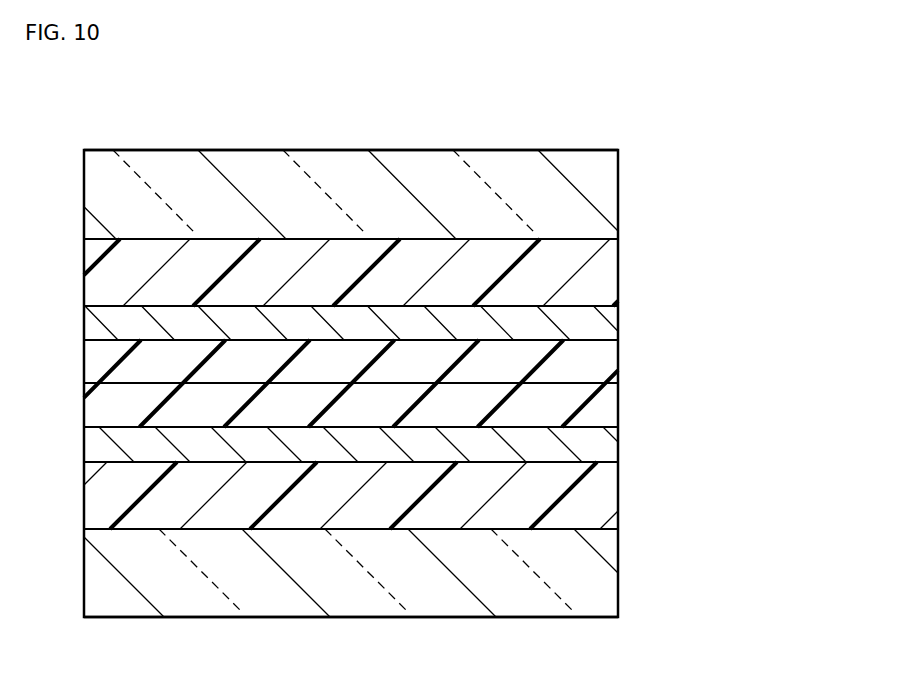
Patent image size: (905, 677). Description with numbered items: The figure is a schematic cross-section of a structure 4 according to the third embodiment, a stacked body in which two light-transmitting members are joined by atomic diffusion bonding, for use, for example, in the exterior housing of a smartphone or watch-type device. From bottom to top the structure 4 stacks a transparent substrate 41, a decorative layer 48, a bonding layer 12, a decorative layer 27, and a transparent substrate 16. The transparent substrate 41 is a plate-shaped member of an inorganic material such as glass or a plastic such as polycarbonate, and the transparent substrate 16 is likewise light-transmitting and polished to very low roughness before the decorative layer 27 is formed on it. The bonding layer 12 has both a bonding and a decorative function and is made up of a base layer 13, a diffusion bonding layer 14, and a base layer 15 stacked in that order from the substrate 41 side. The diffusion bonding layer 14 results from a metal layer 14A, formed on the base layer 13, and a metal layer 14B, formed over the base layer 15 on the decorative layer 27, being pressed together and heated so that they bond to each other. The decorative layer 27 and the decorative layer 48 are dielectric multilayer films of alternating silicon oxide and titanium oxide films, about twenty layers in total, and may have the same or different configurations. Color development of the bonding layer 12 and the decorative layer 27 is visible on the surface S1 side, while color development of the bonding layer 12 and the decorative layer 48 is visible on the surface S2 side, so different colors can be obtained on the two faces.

The structure 4 is at (683, 84).
The surface S1 is at (591, 142).
The surface S2 is at (593, 625).
The transparent substrate 16 is at (609, 196).
The decorative layer 27 is at (609, 276).
The bonding layer 12 is at (435, 384).
The base layer 15 is at (609, 324).
The diffusion bonding layer 14 is at (409, 383).
The metal layer 14B is at (609, 369).
The metal layer 14A is at (609, 403).
The base layer 13 is at (609, 446).
The decorative layer 48 is at (609, 496).
The transparent substrate 41 is at (609, 580).